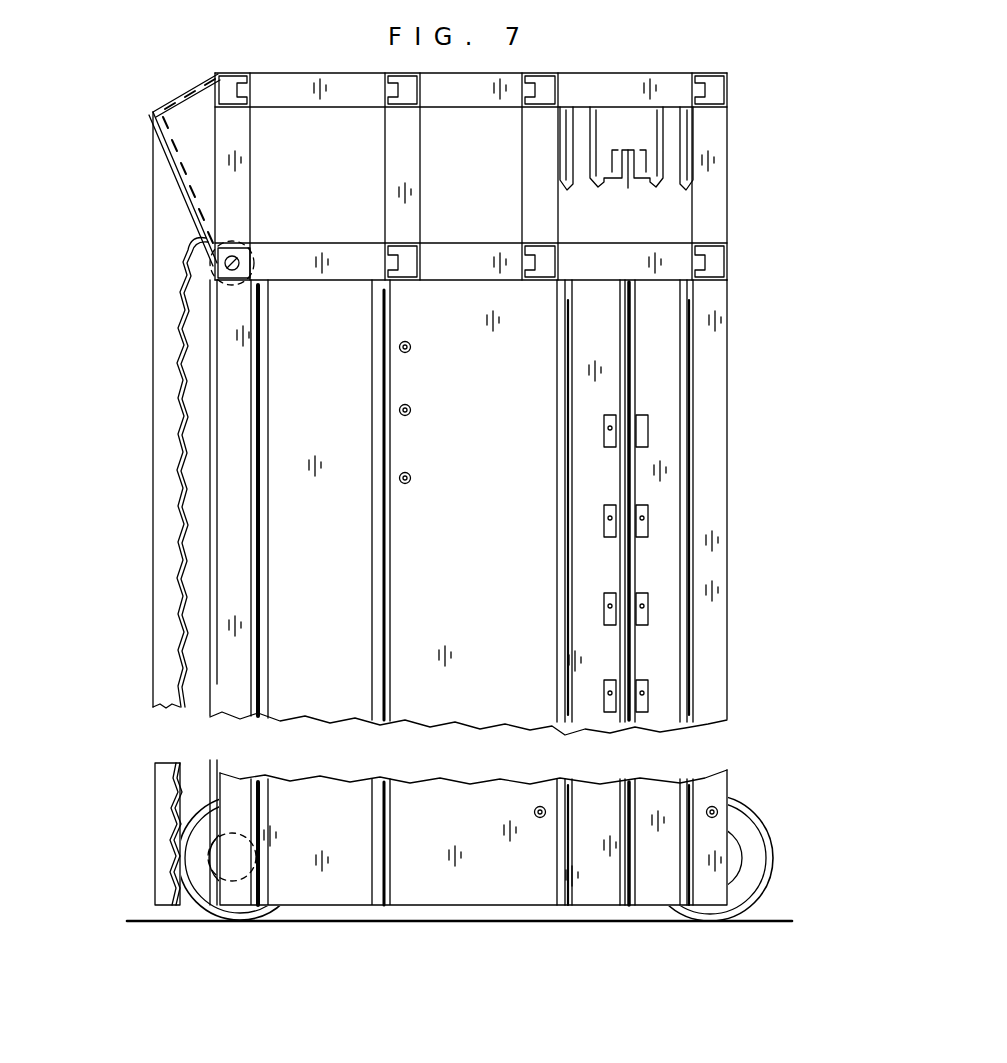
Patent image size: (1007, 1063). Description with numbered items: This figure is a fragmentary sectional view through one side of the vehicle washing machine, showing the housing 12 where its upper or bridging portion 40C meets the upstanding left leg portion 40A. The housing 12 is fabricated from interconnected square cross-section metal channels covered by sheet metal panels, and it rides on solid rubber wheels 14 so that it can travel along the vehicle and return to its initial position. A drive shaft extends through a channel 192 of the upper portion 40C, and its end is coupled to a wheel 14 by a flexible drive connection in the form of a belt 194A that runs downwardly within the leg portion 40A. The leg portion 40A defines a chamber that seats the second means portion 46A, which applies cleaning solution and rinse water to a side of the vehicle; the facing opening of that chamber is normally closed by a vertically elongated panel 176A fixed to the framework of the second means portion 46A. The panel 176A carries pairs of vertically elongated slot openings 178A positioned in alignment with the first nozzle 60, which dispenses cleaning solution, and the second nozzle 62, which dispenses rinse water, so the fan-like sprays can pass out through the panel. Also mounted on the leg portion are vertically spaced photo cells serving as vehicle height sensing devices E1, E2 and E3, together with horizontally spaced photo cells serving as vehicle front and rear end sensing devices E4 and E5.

The housing 12 is at (210, 150).
The wheels 14 is at (168, 871).
The left leg portion 40A is at (206, 476).
The upper or bridging portion 40C is at (334, 70).
The second means portion 46A is at (664, 634).
The first nozzle 60 is at (645, 521).
The second nozzle 62 is at (608, 429).
The vertically elongated panel 176A is at (657, 356).
The vertically elongated slot openings 178A is at (610, 516).
The channel 192 is at (232, 250).
The belt 194A is at (211, 300).
The vehicle height sensing device E1 is at (411, 479).
The vehicle height sensing device E2 is at (411, 411).
The vehicle height sensing device E3 is at (411, 348).
The vehicle end sensing device E4 is at (717, 807).
The vehicle end sensing device E5 is at (535, 810).